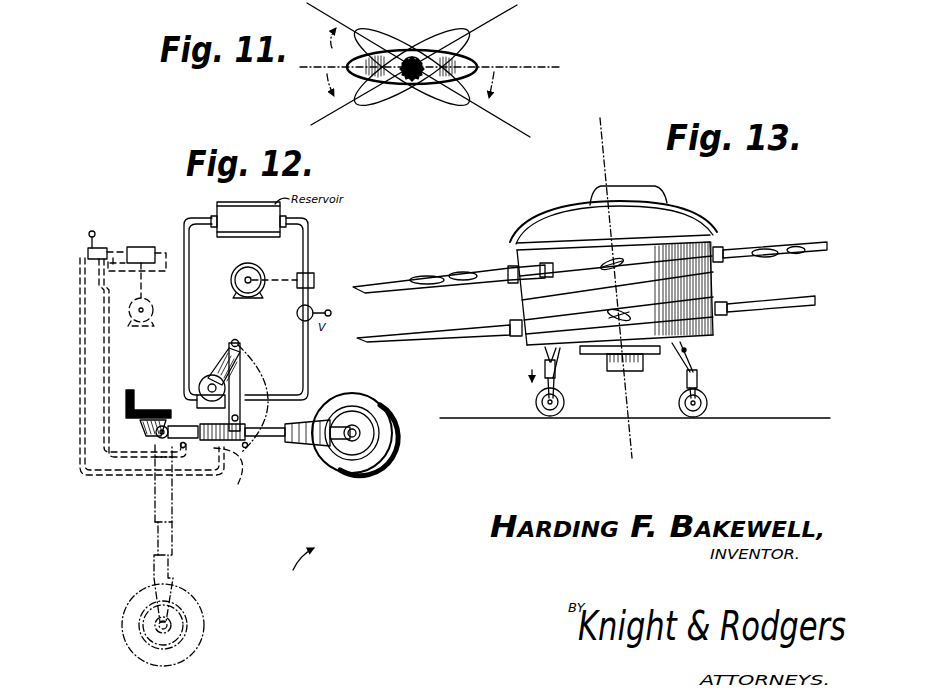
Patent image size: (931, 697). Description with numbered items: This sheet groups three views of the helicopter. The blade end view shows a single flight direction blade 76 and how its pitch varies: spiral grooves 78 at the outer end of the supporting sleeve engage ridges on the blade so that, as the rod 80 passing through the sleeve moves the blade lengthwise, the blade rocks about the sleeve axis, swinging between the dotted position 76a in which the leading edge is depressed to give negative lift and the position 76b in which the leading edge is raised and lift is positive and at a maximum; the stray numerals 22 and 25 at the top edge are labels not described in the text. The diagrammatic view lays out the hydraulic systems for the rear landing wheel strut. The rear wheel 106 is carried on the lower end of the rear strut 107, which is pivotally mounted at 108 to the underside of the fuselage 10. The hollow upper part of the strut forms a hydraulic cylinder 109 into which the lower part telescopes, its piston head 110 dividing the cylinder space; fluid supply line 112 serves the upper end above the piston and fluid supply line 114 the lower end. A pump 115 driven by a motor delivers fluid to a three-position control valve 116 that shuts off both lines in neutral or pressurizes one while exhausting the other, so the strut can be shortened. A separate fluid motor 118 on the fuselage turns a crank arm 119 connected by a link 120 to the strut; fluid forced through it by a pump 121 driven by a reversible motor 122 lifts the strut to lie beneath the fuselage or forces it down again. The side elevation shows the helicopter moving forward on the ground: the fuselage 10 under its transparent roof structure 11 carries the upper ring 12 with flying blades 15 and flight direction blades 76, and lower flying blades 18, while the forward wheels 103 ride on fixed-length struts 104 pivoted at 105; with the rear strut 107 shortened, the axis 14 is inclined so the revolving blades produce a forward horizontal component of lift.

In FIG. 12, the fuselage 10 is at (132, 391).
In FIG. 13, the fuselage 10 is at (715, 240).
In FIG. 13, the transparent roof structure 11 is at (684, 205).
In FIG. 13, the upper ring 12 is at (568, 277).
In FIG. 13, the axis 14 is at (606, 172).
In FIG. 13, the flying blades 15 is at (399, 278).
In FIG. 13, the flying blades 18 is at (445, 313).
In FIG. 11, the element 22 is at (661, 6).
In FIG. 11, the element 25 is at (602, 6).
In FIG. 11, the flight direction blades 76 is at (486, 61).
In FIG. 13, the flight direction blades 76 is at (608, 269).
In FIG. 11, the depressed leading edge position of flight direction blade 76a is at (372, 103).
In FIG. 11, the raised leading edge position of flight direction blade 76b is at (401, 16).
In FIG. 11, the spiral grooves 78 is at (410, 78).
In FIG. 11, the rod 80 is at (420, 56).
In FIG. 13, the forward wheels 103 is at (707, 403).
In FIG. 13, the strut 104 is at (696, 362).
In FIG. 13, the pivotal connection 105 is at (686, 352).
In FIG. 12, the rear wheel 106 is at (380, 400).
In FIG. 13, the rear wheel 106 is at (560, 413).
In FIG. 12, the rear strut 107 is at (276, 443).
In FIG. 13, the rear strut 107 is at (556, 380).
In FIG. 12, the pivotal mounting 108 is at (156, 434).
In FIG. 13, the pivotal mounting 108 is at (545, 350).
In FIG. 12, the hydraulic cylinder 109 is at (213, 450).
In FIG. 12, the piston head 110 is at (231, 478).
In FIG. 12, the fluid supply line 112 is at (99, 354).
In FIG. 12, the fluid supply line 114 is at (80, 402).
In FIG. 12, the pump 115 is at (130, 246).
In FIG. 12, the control valve 116 is at (88, 244).
In FIG. 12, the fluid motor 118 is at (199, 387).
In FIG. 12, the crank arm 119 is at (231, 345).
In FIG. 12, the link 120 is at (243, 372).
In FIG. 12, the pump 121 is at (298, 274).
In FIG. 12, the motor 122 is at (234, 271).